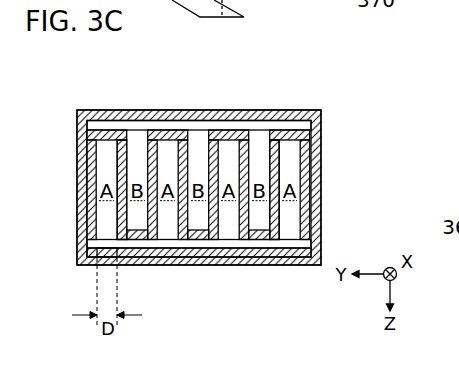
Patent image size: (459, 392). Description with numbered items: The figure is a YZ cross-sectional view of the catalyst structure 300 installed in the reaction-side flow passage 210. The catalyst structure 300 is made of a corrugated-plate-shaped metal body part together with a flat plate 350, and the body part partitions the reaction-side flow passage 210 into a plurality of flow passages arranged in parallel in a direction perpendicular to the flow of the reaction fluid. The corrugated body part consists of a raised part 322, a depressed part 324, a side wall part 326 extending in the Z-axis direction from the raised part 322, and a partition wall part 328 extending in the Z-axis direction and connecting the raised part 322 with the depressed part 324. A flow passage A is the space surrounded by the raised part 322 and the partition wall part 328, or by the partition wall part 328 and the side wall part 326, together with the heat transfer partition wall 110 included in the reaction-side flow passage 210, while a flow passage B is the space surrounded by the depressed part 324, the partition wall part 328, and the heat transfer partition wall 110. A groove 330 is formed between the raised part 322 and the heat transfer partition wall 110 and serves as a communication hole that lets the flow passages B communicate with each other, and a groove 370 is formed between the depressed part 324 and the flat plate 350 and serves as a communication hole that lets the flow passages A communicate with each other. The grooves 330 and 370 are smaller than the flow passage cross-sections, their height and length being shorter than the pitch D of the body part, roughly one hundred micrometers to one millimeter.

The heat transfer partition wall 110 is at (299, 110).
The reaction-side flow passage 210 is at (263, 165).
The catalyst structure 300 is at (177, 95).
The raised part 322 is at (100, 124).
The depressed part 324 is at (200, 248).
The side wall part 326 is at (87, 183).
The partition wall part 328 is at (121, 218).
The groove 330 is at (234, 133).
The flat plate 350 is at (245, 257).
The groove 370 is at (147, 257).